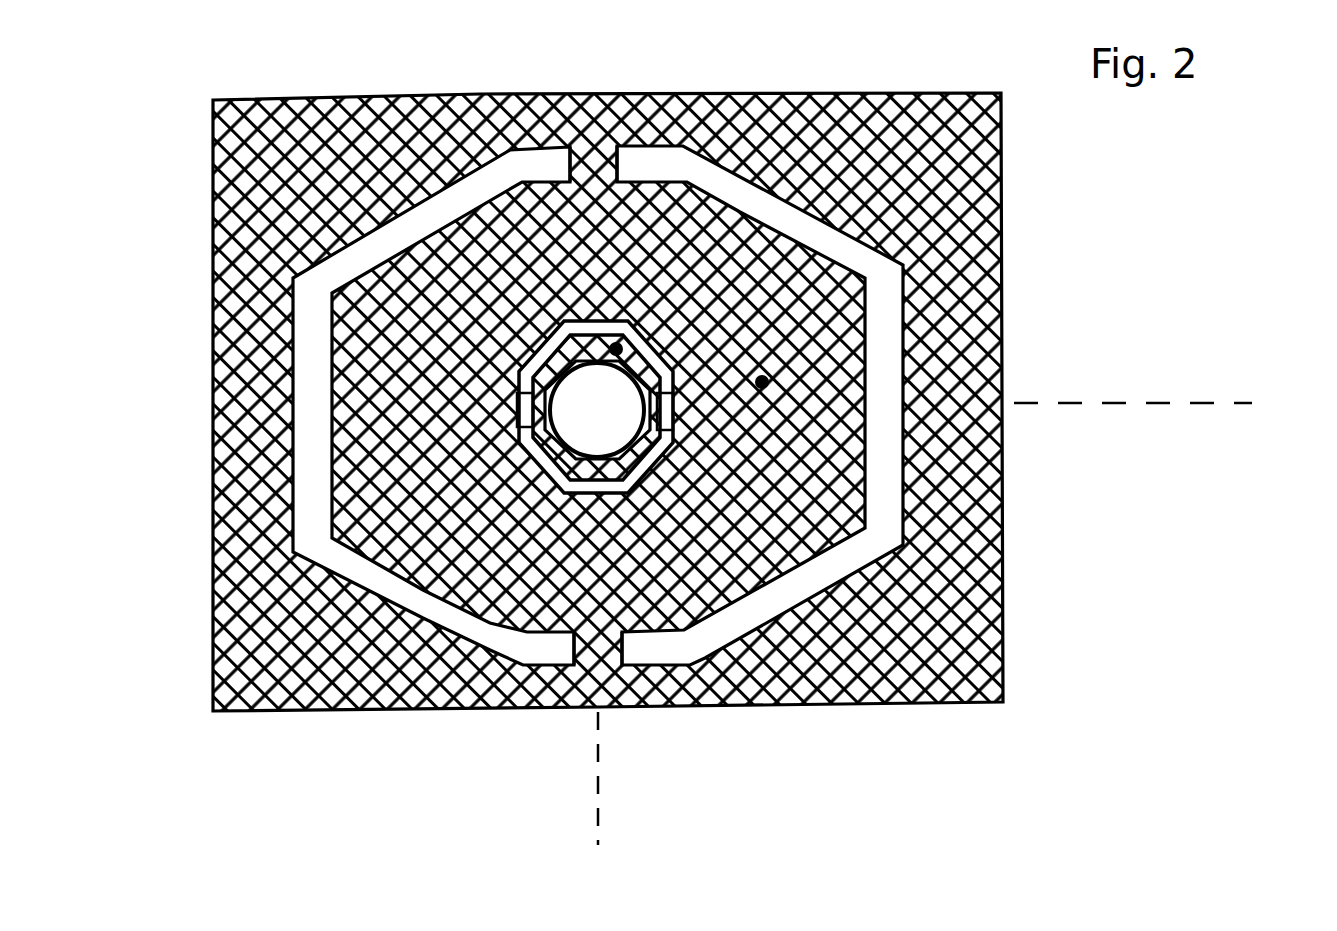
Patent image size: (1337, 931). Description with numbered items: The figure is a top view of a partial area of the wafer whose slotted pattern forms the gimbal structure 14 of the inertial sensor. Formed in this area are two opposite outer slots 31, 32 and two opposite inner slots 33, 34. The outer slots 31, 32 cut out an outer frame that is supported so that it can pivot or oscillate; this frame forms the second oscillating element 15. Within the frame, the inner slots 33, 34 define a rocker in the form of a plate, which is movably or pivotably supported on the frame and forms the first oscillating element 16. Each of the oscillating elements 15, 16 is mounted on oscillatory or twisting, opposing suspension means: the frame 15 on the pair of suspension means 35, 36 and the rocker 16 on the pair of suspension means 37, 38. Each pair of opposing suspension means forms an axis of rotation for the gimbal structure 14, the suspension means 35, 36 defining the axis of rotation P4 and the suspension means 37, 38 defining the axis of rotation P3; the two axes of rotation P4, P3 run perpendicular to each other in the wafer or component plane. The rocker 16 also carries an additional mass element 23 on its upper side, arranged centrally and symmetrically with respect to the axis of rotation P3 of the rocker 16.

The gimbal structure 14 is at (1024, 195).
The second oscillating element 15 is at (764, 382).
The first oscillating element 16 is at (618, 348).
The mass element 23 is at (604, 440).
The outer slot 31 is at (833, 253).
The outer slot 32 is at (312, 450).
The inner slot 33 is at (587, 490).
The inner slot 34 is at (625, 325).
The suspension means 35 is at (633, 665).
The suspension means 36 is at (630, 147).
The suspension means 37 is at (520, 403).
The suspension means 38 is at (662, 413).
The axis of rotation P3 is at (1157, 404).
The axis of rotation P4 is at (599, 796).